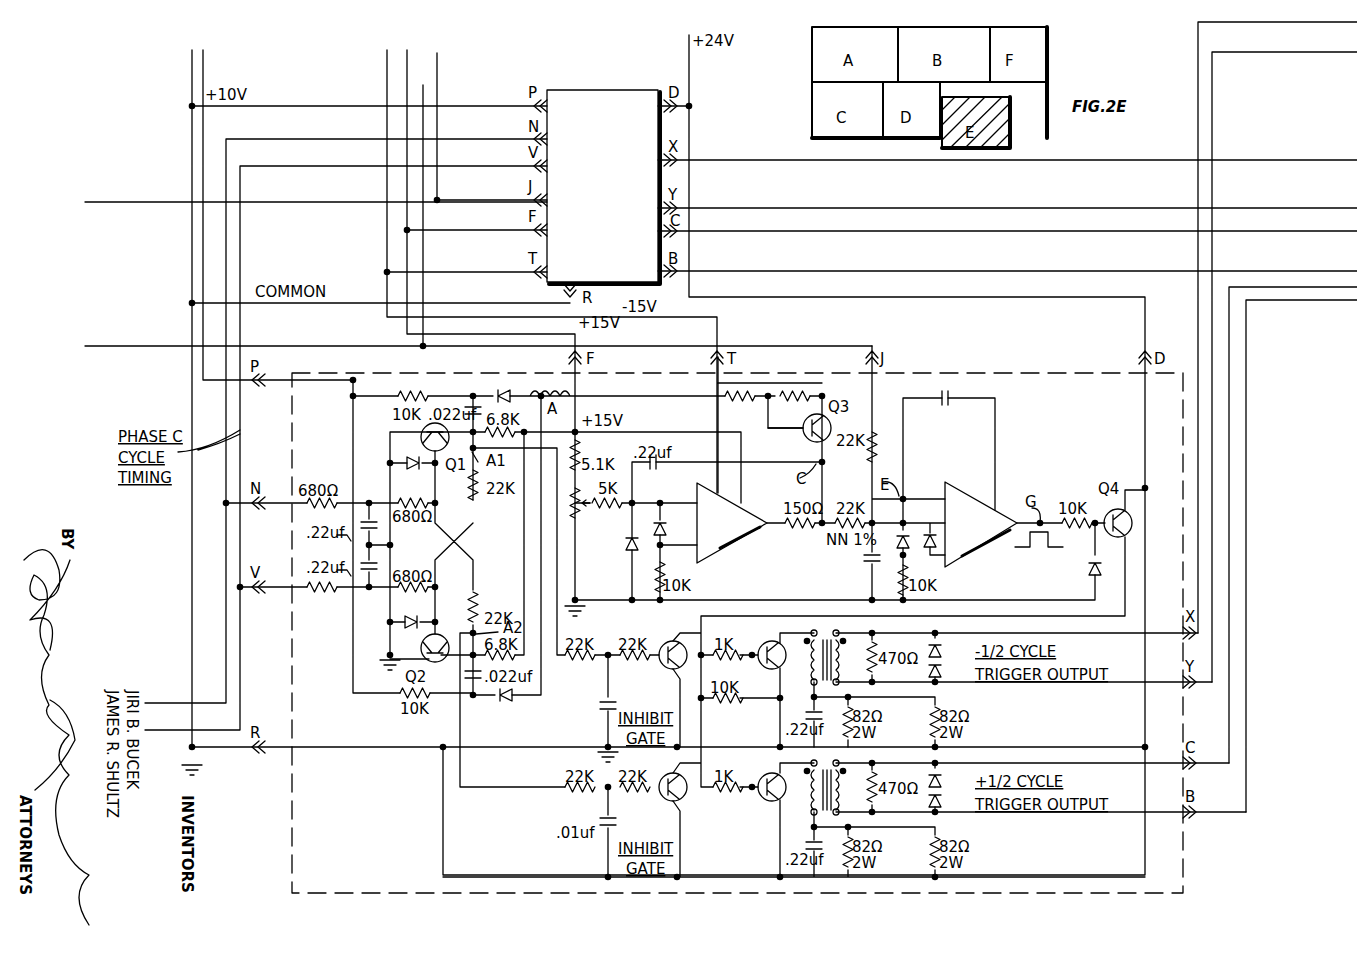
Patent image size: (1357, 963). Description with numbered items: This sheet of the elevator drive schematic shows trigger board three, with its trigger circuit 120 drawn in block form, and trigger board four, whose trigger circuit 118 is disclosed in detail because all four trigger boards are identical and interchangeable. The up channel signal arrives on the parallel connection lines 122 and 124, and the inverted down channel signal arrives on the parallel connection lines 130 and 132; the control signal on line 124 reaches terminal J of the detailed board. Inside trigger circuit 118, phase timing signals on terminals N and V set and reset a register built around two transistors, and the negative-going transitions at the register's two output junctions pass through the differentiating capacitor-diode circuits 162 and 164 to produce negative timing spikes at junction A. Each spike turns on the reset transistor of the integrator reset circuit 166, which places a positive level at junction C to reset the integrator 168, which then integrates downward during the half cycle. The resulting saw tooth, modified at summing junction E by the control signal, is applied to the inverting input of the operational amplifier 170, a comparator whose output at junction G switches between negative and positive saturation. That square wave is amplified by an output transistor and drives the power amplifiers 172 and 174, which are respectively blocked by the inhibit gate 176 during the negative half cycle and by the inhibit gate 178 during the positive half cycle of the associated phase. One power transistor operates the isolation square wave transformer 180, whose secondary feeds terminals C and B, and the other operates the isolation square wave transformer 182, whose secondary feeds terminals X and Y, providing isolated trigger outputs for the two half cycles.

The trigger circuit 118 is at (737, 633).
The trigger circuit 120 is at (603, 187).
The parallel connection line 122 is at (435, 84).
The parallel connection line 124 is at (678, 346).
The parallel connection line 130 is at (447, 51).
The parallel connection line 132 is at (490, 200).
The differentiating capacitor-diode circuit 162 is at (494, 383).
The differentiating capacitor-diode circuit 164 is at (485, 707).
The integrator reset circuit 166 is at (789, 424).
The integrator 168 is at (746, 540).
The operational amplifier 170 is at (966, 540).
The power amplifier 172 is at (764, 808).
The power amplifier 174 is at (782, 674).
The inhibit gate 176 is at (659, 800).
The inhibit gate 178 is at (659, 668).
The isolation square wave transformer 180 is at (828, 815).
The isolation square wave transformer 182 is at (827, 628).